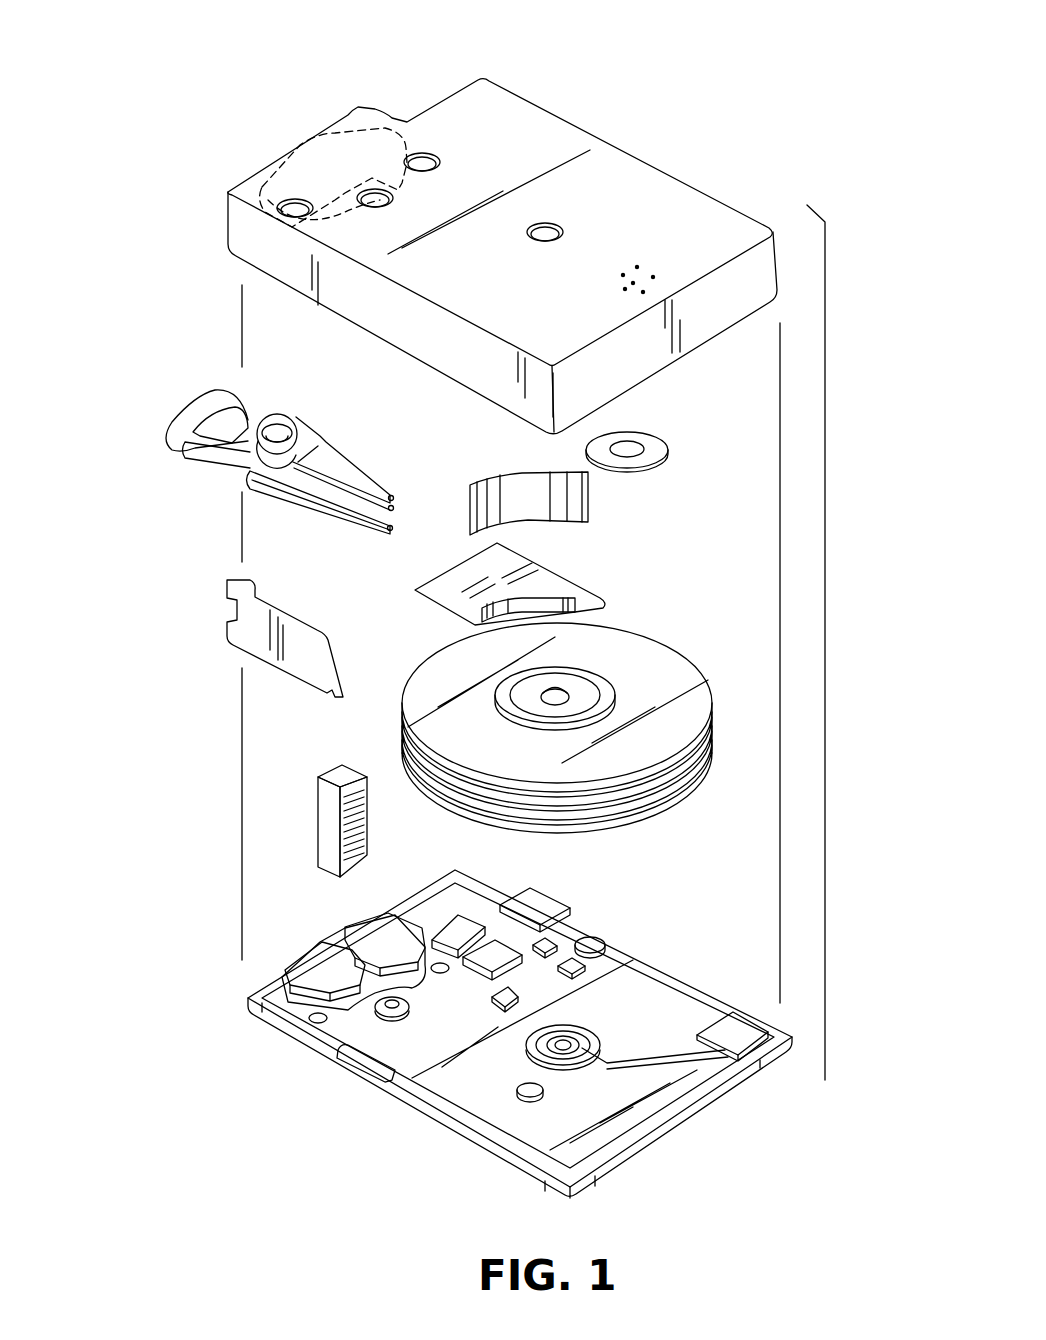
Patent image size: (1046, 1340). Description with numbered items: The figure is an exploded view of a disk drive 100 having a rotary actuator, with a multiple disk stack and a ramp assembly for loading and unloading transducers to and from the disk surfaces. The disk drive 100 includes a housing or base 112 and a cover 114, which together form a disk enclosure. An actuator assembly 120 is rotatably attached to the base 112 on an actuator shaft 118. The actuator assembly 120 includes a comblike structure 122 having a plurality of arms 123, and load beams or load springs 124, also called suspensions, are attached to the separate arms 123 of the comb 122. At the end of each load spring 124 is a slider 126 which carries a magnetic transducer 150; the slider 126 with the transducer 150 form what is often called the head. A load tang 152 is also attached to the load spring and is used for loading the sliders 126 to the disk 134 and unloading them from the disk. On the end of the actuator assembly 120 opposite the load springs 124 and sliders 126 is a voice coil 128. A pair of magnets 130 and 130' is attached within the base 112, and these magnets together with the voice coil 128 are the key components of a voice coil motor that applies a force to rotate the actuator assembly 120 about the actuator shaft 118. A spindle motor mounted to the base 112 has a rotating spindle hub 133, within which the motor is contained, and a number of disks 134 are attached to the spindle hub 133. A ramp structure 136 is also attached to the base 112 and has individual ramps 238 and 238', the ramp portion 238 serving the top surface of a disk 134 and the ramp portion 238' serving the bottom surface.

The disk drive 100 is at (649, 106).
The base 112 is at (683, 1000).
The cover 114 is at (661, 190).
The actuator shaft 118 is at (276, 422).
The actuator assembly 120 is at (215, 462).
The comblike structure 122 is at (305, 507).
The arms 123 is at (313, 425).
The load springs 124 is at (358, 477).
The slider 126 is at (392, 497).
The voice coil 128 is at (190, 410).
The magnet 130 is at (287, 949).
The magnet 130' is at (327, 155).
The spindle hub 133 is at (558, 687).
The disk 134 is at (678, 670).
The ramp structure 136 is at (323, 820).
The magnetic transducer 150 is at (392, 507).
The load tang 152 is at (392, 530).
The ramp portion 238 is at (320, 769).
The ramp portion 238' is at (388, 825).